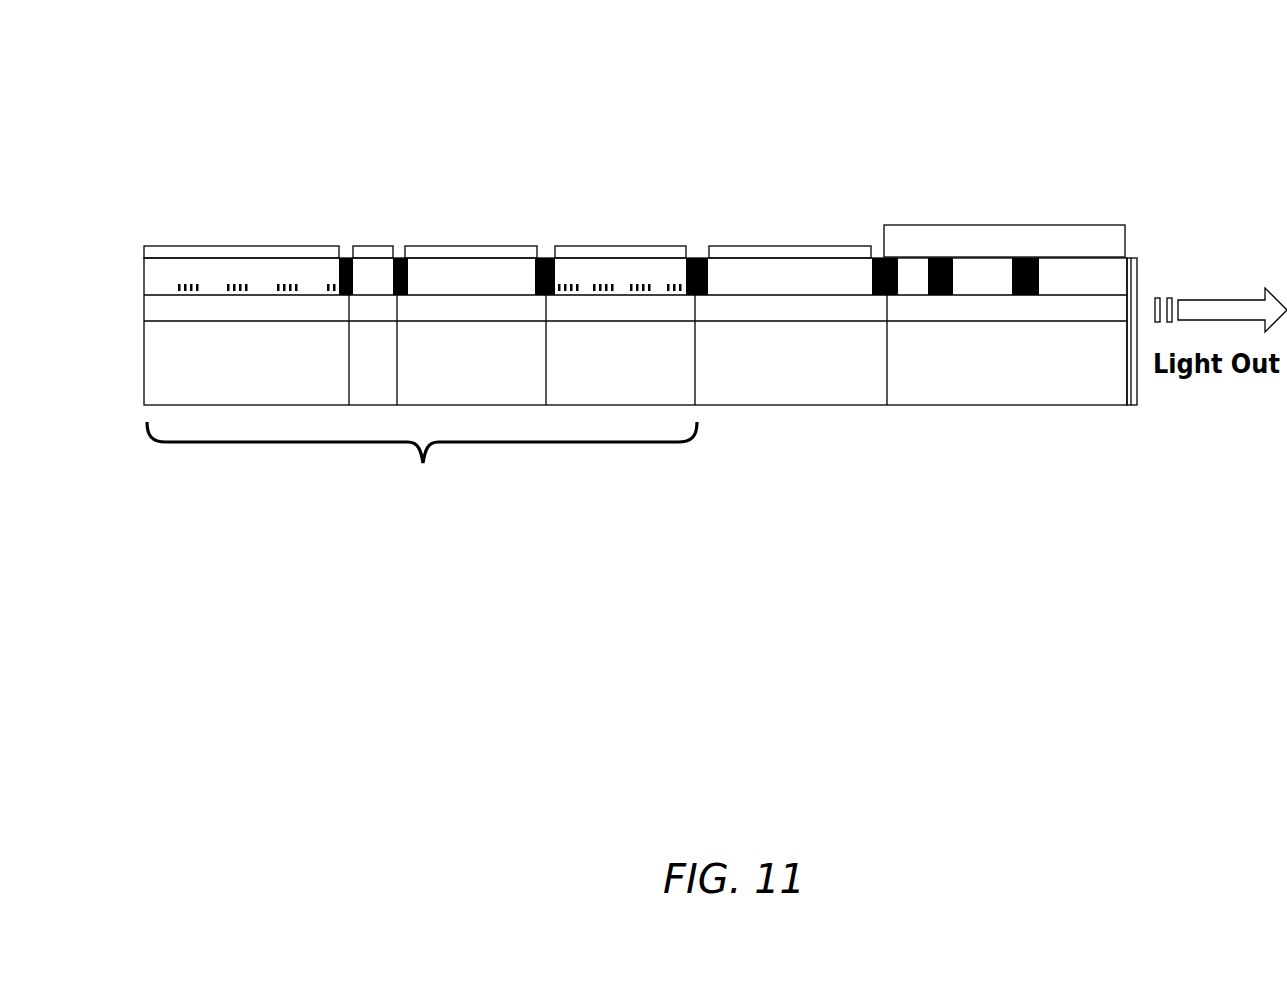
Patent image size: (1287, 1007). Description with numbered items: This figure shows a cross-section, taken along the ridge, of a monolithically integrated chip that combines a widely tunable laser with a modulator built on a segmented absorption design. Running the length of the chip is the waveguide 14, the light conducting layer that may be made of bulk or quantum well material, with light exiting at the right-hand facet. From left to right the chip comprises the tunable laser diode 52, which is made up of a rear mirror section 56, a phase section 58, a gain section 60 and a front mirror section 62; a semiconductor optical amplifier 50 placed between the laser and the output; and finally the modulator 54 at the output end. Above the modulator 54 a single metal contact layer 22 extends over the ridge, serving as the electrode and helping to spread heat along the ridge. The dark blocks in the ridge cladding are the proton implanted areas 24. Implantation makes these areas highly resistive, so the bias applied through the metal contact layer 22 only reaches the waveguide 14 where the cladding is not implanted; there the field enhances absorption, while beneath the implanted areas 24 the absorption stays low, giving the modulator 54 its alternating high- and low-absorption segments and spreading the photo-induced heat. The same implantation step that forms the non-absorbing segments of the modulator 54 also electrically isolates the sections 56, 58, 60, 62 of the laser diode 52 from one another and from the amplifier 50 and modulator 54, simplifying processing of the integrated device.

The waveguide 14 is at (144, 311).
The metal contact layer 22 is at (1011, 225).
The proton implanted area 24 is at (400, 246).
The semiconductor optical amplifier 50 is at (793, 407).
The tunable laser diode 52 is at (422, 464).
The modulator 54 is at (965, 407).
The rear mirror section 56 is at (241, 246).
The phase section 58 is at (370, 246).
The gain section 60 is at (466, 246).
The front mirror section 62 is at (608, 246).